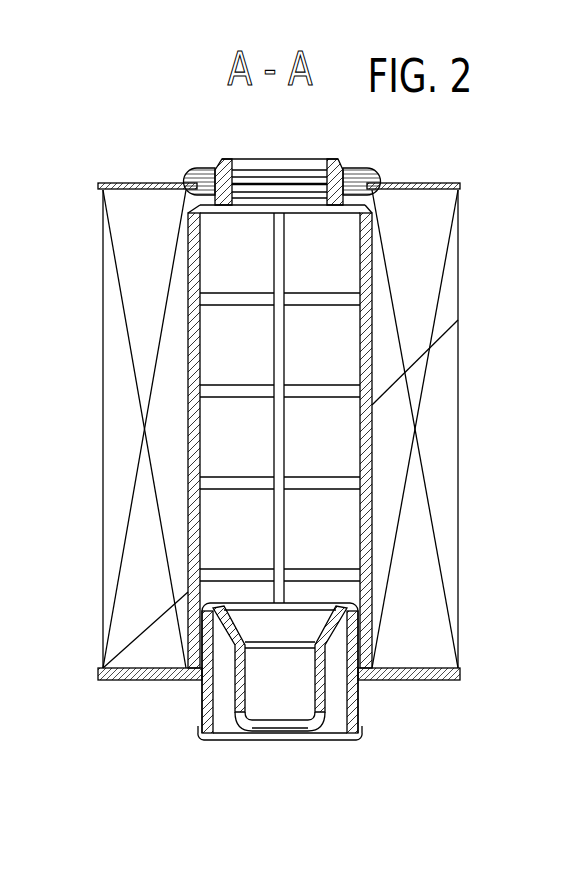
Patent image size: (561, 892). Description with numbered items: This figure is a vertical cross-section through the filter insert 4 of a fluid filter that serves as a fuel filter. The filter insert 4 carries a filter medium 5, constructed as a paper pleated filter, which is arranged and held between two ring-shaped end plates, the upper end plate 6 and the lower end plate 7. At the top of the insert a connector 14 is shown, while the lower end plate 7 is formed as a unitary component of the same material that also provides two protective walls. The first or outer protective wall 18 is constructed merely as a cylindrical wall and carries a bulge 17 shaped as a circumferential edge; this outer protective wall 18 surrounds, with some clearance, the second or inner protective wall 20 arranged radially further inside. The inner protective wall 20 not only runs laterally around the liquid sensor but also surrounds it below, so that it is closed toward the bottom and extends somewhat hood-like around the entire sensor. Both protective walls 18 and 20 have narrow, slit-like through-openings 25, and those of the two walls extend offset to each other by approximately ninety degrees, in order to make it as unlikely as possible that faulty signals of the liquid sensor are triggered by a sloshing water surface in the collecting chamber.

The filter insert 4 is at (470, 467).
The filter medium 5 is at (423, 304).
The upper end plate 6 is at (458, 193).
The lower end plate 7 is at (450, 680).
The upper connector cap 14 is at (222, 163).
The bulge 17 is at (363, 735).
The outer protective wall 18 is at (358, 692).
The inner protective wall 20 is at (318, 670).
The through-openings 25 is at (247, 728).